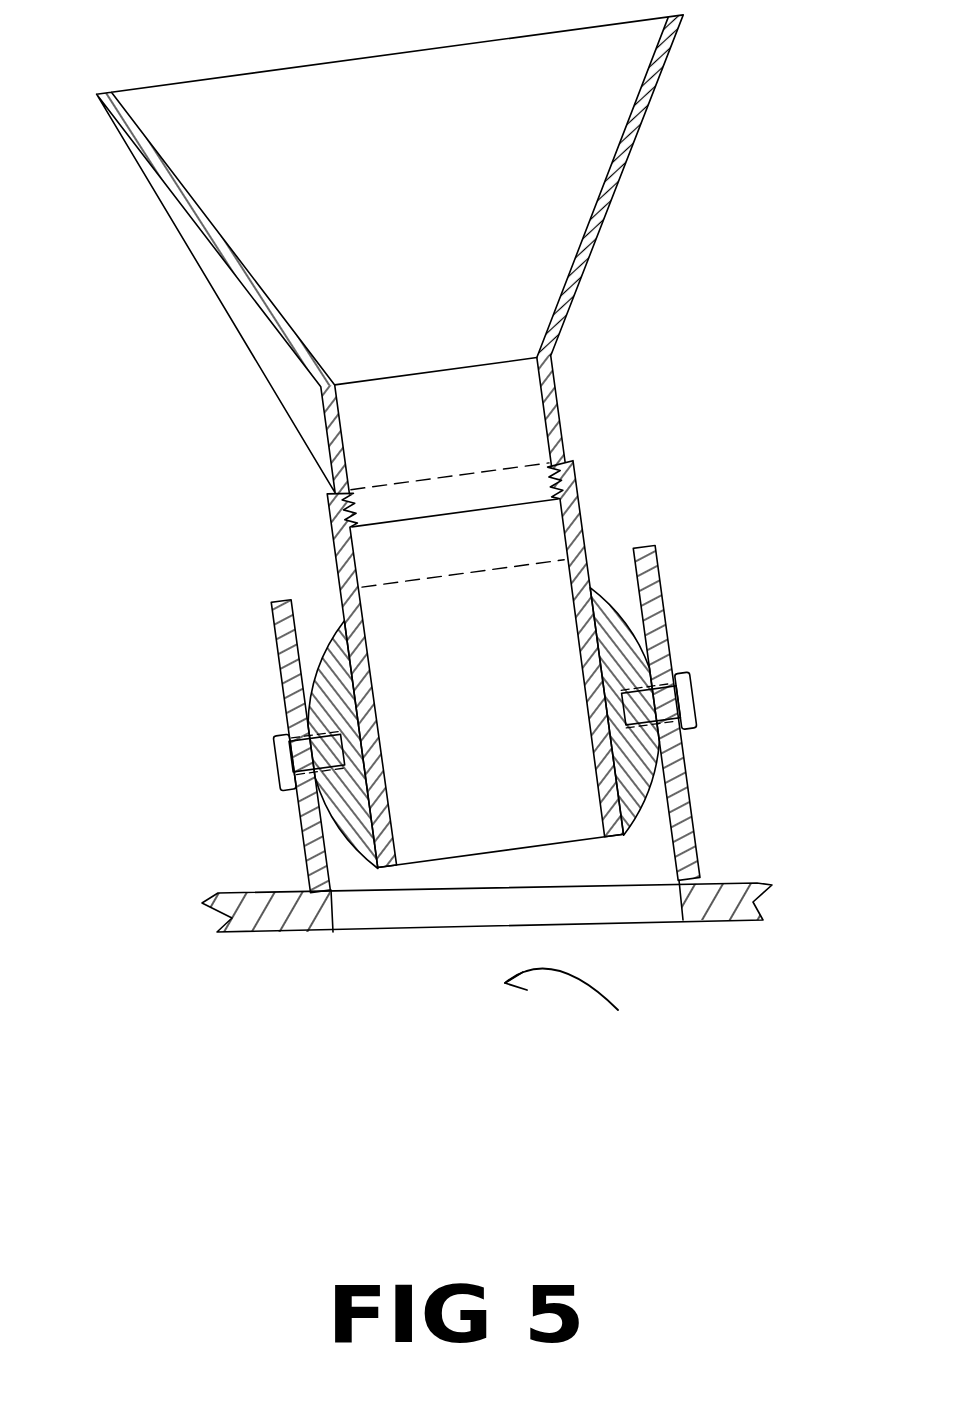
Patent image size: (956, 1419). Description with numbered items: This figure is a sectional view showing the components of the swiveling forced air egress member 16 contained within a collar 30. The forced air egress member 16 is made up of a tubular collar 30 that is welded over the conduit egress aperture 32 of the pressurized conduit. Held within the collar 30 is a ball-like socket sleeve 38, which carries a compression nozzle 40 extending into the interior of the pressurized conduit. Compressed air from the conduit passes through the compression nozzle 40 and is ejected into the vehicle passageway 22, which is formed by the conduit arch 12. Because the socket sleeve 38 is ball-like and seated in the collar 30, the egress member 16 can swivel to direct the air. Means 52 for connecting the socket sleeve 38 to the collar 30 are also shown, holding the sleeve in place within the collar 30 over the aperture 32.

The conduit arch 12 is at (720, 908).
The swiveling forced air egress member 16 is at (645, 505).
The vehicle passageway 22 is at (579, 1021).
The tubular collar 30 is at (303, 842).
The conduit egress aperture 32 is at (382, 913).
The ball-like socket sleeve 38 is at (325, 677).
The compression nozzle 40 is at (243, 290).
The means for connecting socket to collar 52 is at (682, 700).